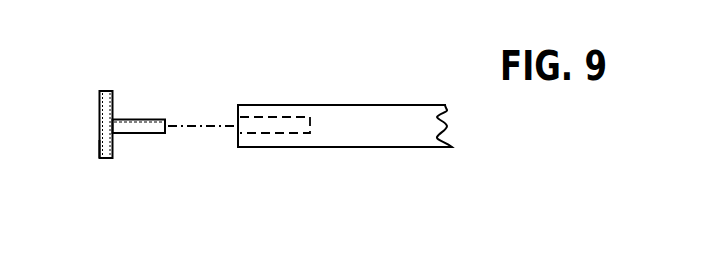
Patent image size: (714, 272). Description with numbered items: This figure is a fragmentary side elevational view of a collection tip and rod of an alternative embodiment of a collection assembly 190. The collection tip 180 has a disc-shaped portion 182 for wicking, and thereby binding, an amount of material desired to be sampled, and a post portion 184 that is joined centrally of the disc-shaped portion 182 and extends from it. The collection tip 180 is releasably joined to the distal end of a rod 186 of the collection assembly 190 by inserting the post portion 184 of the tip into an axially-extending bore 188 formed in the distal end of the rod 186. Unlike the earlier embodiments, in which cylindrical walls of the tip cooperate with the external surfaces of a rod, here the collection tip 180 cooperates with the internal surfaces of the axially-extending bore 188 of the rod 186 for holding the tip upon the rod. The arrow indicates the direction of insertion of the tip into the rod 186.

The collection tip 180 is at (108, 91).
The disc-shaped portion 182 is at (108, 158).
The post portion 184 is at (138, 133).
The rod 186 is at (367, 117).
The axially-extending bore 188 is at (277, 117).
The collection assembly 190 is at (383, 167).